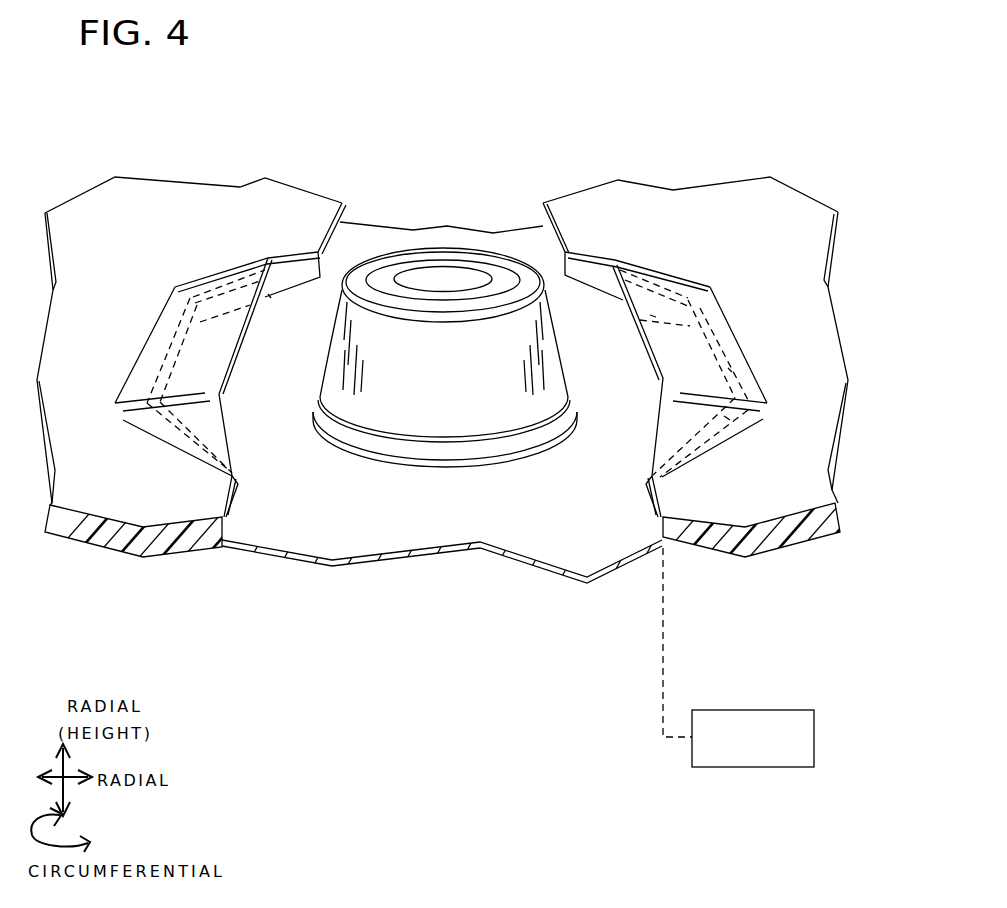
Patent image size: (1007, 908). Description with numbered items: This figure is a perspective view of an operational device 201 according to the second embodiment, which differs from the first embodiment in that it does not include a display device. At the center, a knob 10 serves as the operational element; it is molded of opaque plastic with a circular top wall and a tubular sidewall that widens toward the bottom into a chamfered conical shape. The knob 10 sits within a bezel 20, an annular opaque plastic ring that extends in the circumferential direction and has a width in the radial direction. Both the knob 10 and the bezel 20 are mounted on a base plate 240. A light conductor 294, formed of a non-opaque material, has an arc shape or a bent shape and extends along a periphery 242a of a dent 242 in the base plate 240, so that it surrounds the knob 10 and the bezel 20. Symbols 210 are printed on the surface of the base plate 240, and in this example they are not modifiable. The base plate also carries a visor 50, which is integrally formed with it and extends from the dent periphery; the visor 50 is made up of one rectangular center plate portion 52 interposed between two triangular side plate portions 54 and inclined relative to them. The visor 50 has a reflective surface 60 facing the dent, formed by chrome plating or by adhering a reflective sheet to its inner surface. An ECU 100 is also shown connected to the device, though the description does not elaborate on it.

The operational device 201 is at (562, 93).
The knob 10 is at (441, 243).
The bezel 20 is at (536, 464).
The visor 50 is at (730, 278).
The center plate portion 52 is at (170, 345).
The side plate portion 54 is at (212, 281).
The reflective surface 60 is at (270, 296).
The ECU 100 is at (768, 769).
The symbols 210 is at (326, 492).
The base plate 240 is at (652, 168).
The dent 242 is at (653, 313).
The periphery of the dent 242a is at (730, 370).
The light conductor 294 is at (727, 418).